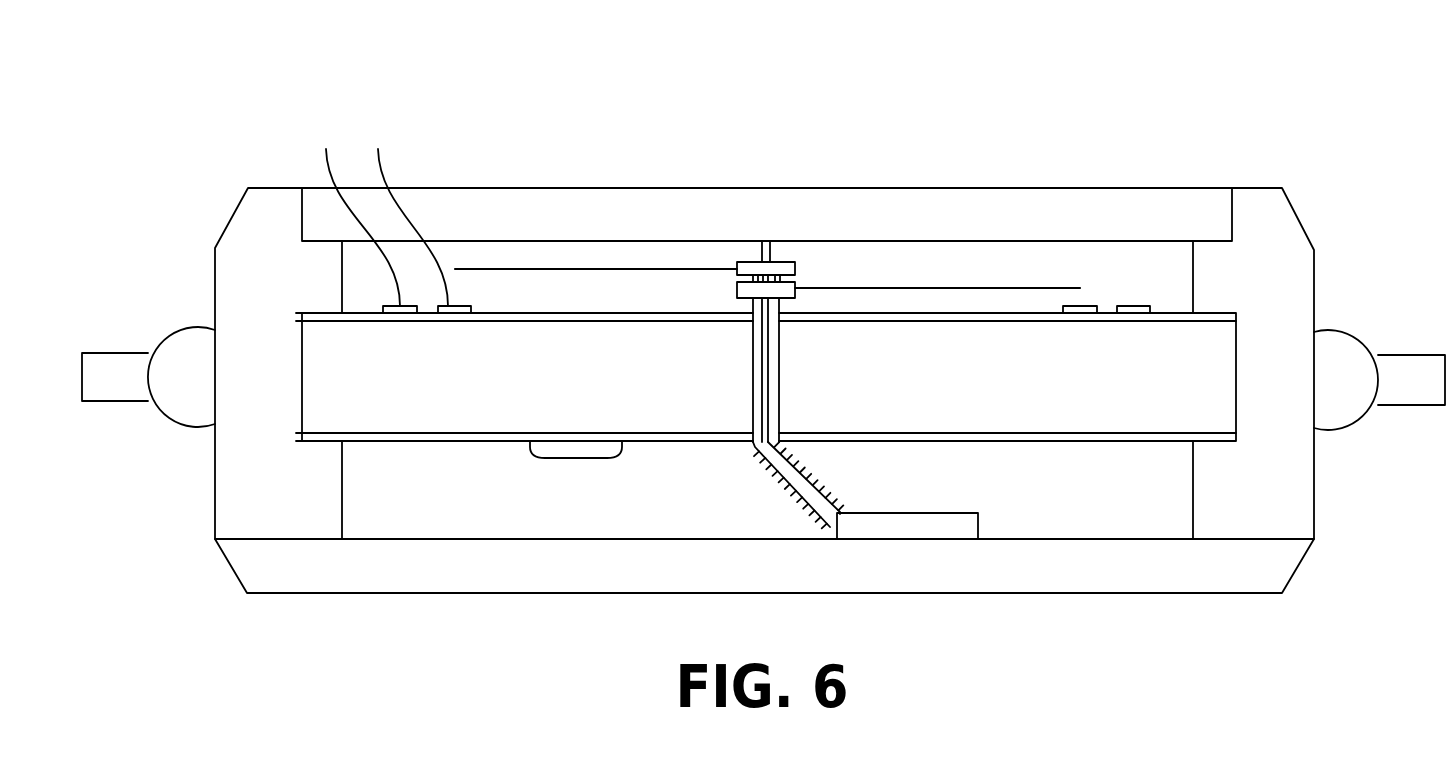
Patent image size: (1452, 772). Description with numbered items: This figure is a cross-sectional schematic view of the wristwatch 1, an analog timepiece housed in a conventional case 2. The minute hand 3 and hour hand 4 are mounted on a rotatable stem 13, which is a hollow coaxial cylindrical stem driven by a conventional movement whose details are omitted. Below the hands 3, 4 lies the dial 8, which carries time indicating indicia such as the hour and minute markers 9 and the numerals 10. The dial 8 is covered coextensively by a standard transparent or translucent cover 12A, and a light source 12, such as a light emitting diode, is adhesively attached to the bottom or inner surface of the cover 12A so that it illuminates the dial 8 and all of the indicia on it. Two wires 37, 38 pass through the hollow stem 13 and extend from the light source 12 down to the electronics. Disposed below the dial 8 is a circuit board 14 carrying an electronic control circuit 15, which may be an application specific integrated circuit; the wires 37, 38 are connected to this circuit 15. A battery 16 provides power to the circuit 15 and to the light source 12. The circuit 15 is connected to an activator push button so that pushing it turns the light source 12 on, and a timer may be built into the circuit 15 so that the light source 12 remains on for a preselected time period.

The wristwatch 1 is at (1196, 121).
The case 2 is at (1280, 227).
The minute hand 3 is at (562, 276).
The hour hand 4 is at (922, 288).
The dial 8 is at (356, 323).
The hour and minute markers 9 is at (355, 201).
The numerals 10 is at (404, 201).
The light source 12 is at (770, 241).
The cover 12A is at (572, 217).
The stem 13 is at (750, 357).
The circuit board 14 is at (483, 433).
The electronic control circuit 15 is at (565, 460).
The battery 16 is at (945, 523).
The wire 37 is at (760, 249).
The wire 38 is at (775, 250).